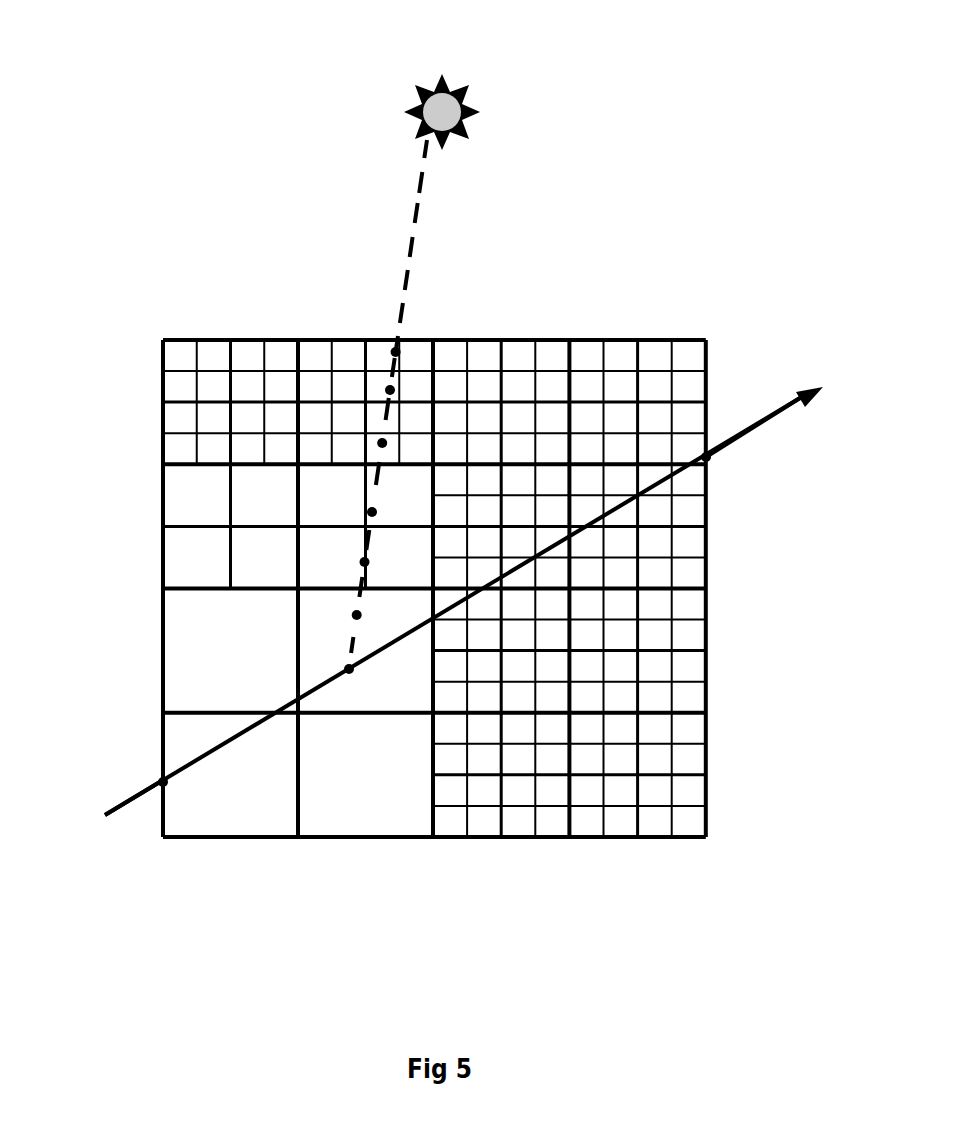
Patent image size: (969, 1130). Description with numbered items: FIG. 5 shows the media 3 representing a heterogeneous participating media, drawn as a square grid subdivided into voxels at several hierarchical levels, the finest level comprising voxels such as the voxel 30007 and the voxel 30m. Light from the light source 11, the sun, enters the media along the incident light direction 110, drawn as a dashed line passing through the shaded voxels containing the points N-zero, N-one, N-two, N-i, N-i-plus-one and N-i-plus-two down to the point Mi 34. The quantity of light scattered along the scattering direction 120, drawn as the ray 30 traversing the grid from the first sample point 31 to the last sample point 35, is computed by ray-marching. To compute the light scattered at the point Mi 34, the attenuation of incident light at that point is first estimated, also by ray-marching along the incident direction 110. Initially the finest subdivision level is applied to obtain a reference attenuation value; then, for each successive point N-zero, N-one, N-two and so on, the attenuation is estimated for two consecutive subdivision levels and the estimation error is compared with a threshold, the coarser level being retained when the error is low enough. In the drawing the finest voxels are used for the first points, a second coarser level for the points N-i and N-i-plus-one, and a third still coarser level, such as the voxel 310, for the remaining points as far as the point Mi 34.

The light source 11 is at (412, 97).
The incident light direction ωin 110 is at (418, 220).
The scattering direction ωout 120 is at (790, 412).
The hierarchical voxel grid 3 is at (163, 403).
The ray origin segment 30 is at (112, 802).
The point M0 31 is at (153, 790).
The point Mi 34 is at (350, 677).
The point Mm 35 is at (713, 463).
The coarse voxel cell 310 is at (313, 623).
The voxel 30007 is at (350, 347).
The voxel 30m is at (687, 820).